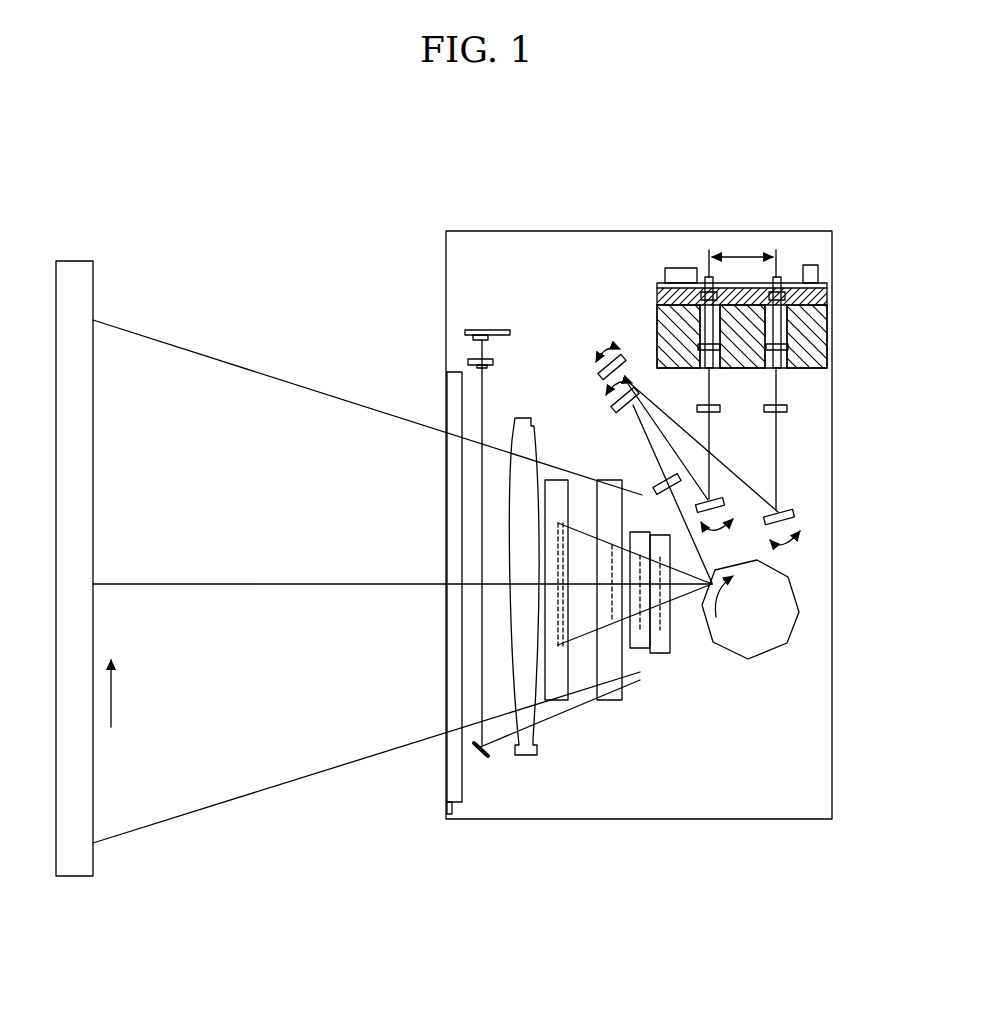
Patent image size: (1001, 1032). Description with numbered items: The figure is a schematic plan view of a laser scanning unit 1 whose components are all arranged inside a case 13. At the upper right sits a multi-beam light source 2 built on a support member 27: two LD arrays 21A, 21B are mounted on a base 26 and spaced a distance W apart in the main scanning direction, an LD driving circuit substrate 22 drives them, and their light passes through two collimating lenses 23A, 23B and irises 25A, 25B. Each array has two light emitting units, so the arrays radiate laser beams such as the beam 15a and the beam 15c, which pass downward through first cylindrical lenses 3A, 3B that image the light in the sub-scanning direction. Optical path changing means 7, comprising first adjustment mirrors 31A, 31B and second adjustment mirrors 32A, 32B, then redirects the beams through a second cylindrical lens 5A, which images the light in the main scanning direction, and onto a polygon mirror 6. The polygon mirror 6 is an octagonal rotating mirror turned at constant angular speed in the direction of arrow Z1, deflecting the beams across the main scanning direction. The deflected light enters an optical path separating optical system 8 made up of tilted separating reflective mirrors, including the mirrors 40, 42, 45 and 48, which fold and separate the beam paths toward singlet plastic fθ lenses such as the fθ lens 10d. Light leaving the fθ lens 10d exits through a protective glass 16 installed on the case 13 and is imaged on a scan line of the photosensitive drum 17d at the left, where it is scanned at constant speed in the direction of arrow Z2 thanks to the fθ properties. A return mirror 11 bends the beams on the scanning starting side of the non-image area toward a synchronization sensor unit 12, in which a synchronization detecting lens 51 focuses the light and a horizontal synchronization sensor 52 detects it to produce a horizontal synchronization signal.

The laser scanning unit 1 is at (485, 184).
The multi-beam light source 2 is at (744, 300).
The first cylindrical lens 3A is at (716, 412).
The first cylindrical lens 3B is at (787, 409).
The second cylindrical lens 5A is at (656, 481).
The polygon mirror 6 is at (750, 638).
The optical path changing means 7 is at (643, 429).
The optical path separating optical system 8 is at (624, 757).
The fθ lens 10d is at (535, 745).
The return mirror 11 is at (481, 760).
The synchronization sensor unit 12 is at (419, 328).
The case 13 is at (833, 770).
The laser beam 15a is at (710, 452).
The laser beam 15c is at (777, 485).
The protective glass 16 is at (449, 815).
The photosensitive drum 17d is at (72, 878).
The LD array 21A is at (705, 277).
The LD array 21B is at (777, 277).
The LD driving circuit substrate 22 is at (795, 290).
The collimating lens 23A is at (695, 335).
The collimating lens 23B is at (790, 350).
The iris 25A is at (706, 370).
The iris 25B is at (790, 368).
The base 26 is at (828, 290).
The support member 27 is at (818, 318).
The first adjustment mirror 31A is at (724, 504).
The first adjustment mirror 31B is at (795, 516).
The second adjustment mirror 32A is at (600, 368).
The second adjustment mirror 32B is at (612, 408).
The separating reflective mirror 40 is at (685, 631).
The separating reflective mirror 42 is at (615, 700).
The separating reflective mirror 45 is at (565, 700).
The separating reflective mirror 48 is at (651, 654).
The synchronization detecting lens 51 is at (468, 360).
The horizontal synchronization sensor 52 is at (467, 330).
The distance between LD arrays W is at (742, 256).
The rotation direction of polygon mirror Z1 is at (722, 600).
The scanning direction Z2 is at (112, 690).